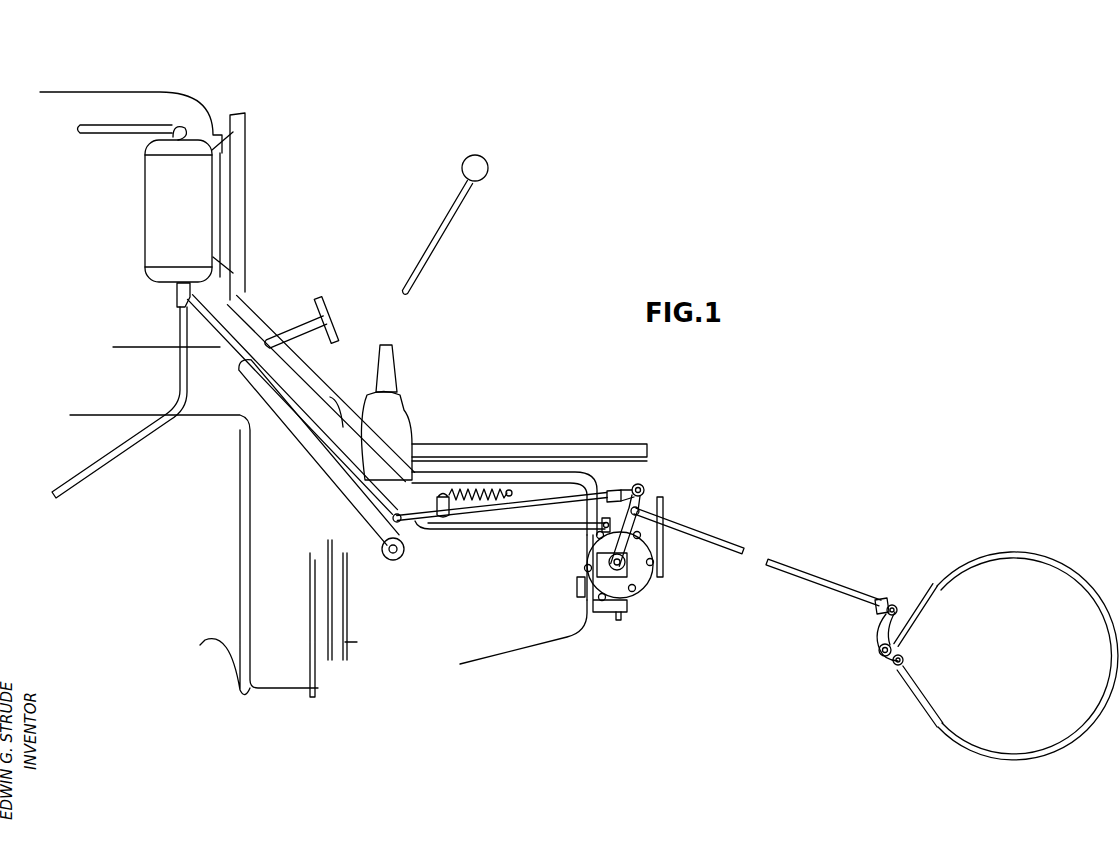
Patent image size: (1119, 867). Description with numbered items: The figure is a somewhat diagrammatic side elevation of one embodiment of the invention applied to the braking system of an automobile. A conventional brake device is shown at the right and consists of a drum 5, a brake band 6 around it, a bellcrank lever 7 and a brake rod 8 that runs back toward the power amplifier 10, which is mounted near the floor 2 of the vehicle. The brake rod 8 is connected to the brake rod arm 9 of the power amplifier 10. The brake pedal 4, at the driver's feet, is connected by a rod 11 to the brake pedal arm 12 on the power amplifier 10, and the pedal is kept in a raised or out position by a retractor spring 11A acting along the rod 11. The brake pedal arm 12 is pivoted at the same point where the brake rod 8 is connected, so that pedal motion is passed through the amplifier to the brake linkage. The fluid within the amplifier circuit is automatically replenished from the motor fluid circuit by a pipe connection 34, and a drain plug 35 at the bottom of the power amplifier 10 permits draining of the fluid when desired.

The floor board 2 is at (560, 633).
The brake pedal 4 is at (297, 325).
The drum 5 is at (917, 641).
The brake band 6 is at (910, 617).
The bellcrank lever 7 is at (877, 632).
The brake rod 8 is at (730, 543).
The brake rod arm 9 is at (633, 550).
The power amplifier 10 is at (645, 582).
The rod 11 is at (465, 512).
The retractor spring 11A is at (480, 488).
The brake pedal arm 12 is at (642, 498).
The pipe connection 34 is at (520, 530).
The drain plug 35 is at (619, 618).